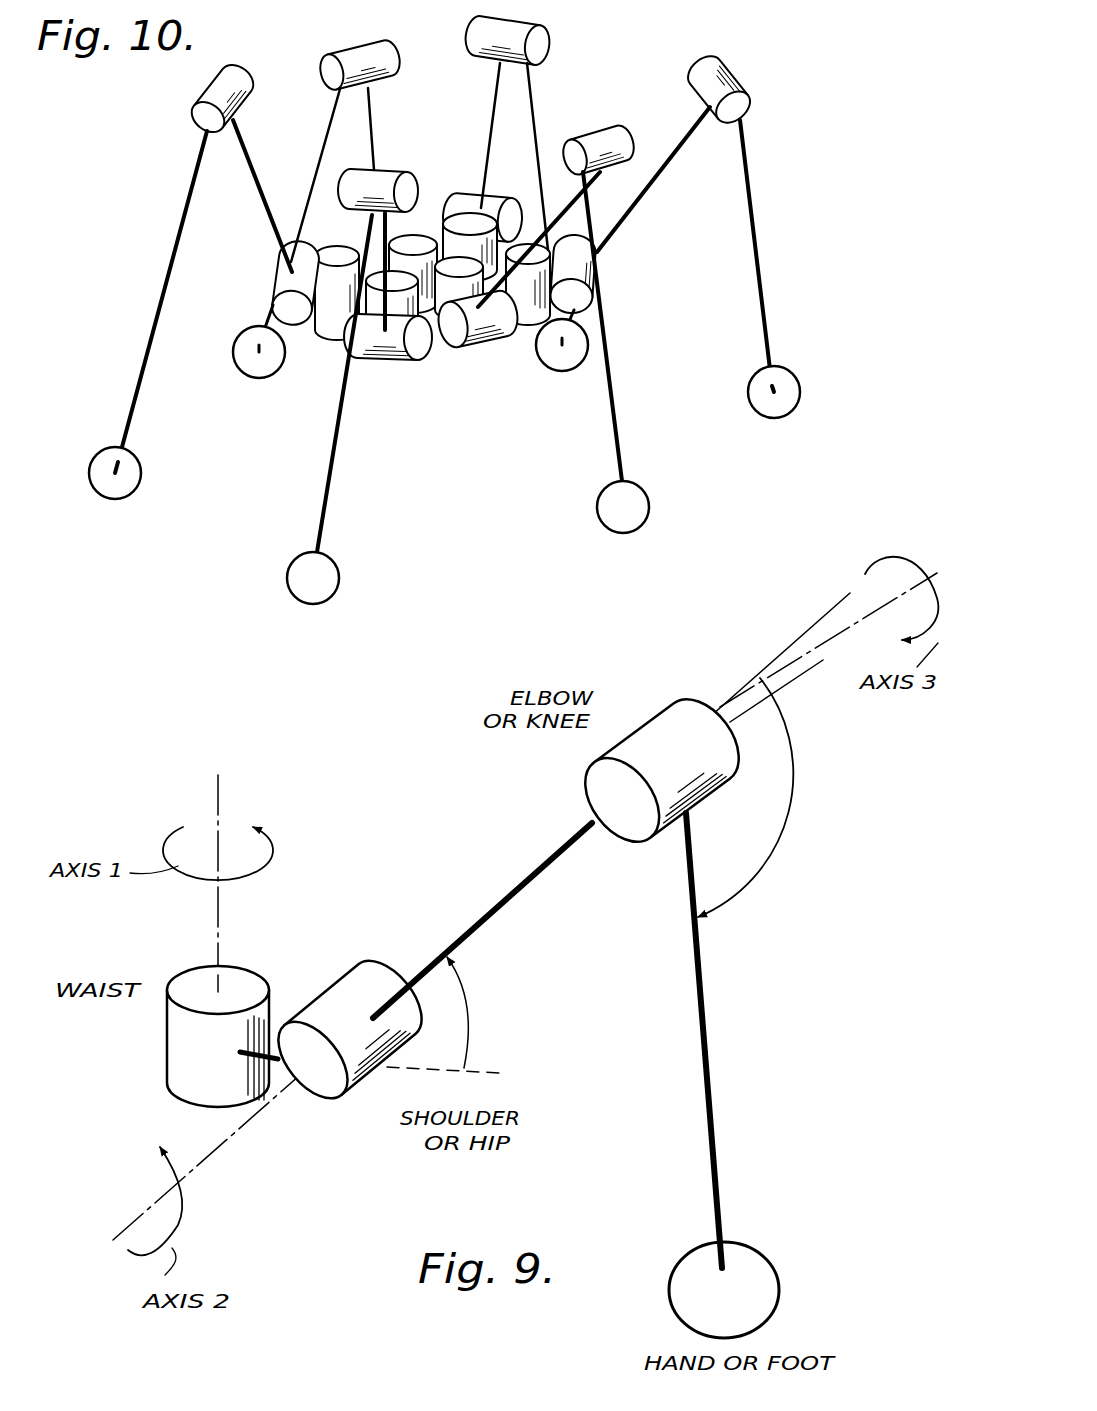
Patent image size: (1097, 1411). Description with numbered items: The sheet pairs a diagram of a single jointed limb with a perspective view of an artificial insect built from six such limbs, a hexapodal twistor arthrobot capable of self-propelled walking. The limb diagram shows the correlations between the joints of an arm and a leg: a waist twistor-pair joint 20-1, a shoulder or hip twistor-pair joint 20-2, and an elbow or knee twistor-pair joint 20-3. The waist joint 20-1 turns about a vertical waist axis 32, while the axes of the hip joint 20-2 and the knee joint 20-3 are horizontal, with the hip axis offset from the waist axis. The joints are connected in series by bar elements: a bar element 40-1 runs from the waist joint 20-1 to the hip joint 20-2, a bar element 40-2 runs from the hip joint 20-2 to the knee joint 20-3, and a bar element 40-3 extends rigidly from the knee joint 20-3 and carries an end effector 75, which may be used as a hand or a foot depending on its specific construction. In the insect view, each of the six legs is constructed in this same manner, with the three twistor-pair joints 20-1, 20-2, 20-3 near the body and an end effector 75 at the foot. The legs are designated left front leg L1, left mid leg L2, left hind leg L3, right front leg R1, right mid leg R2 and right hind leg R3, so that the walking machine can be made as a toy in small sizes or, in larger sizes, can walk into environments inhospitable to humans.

In FIG. 10, the waist twistor-pair joint 20-1 is at (329, 336).
In FIG. 9, the waist twistor-pair joint 20-1 is at (162, 1053).
In FIG. 10, the shoulder or hip twistor-pair joint 20-2 is at (276, 275).
In FIG. 9, the shoulder or hip twistor-pair joint 20-2 is at (333, 1108).
In FIG. 10, the elbow or knee twistor-pair joint 20-3 is at (195, 89).
In FIG. 9, the elbow or knee twistor-pair joint 20-3 is at (580, 770).
In FIG. 9, the waist axis 32 is at (218, 920).
In FIG. 9, the bar element 40-1 is at (245, 1042).
In FIG. 10, the bar element 40-2 is at (264, 163).
In FIG. 9, the bar element 40-2 is at (510, 888).
In FIG. 10, the bar element 40-3 is at (144, 349).
In FIG. 9, the bar element 40-3 is at (711, 1041).
In FIG. 10, the end effector 75 is at (469, 461).
In FIG. 9, the end effector 75 is at (781, 1268).
In FIG. 10, the left front leg L1 is at (101, 501).
In FIG. 10, the left mid leg L2 is at (243, 379).
In FIG. 10, the left hind leg L3 is at (577, 376).
In FIG. 10, the right front leg R1 is at (789, 414).
In FIG. 10, the right mid leg R2 is at (656, 507).
In FIG. 10, the right hind leg R3 is at (341, 577).